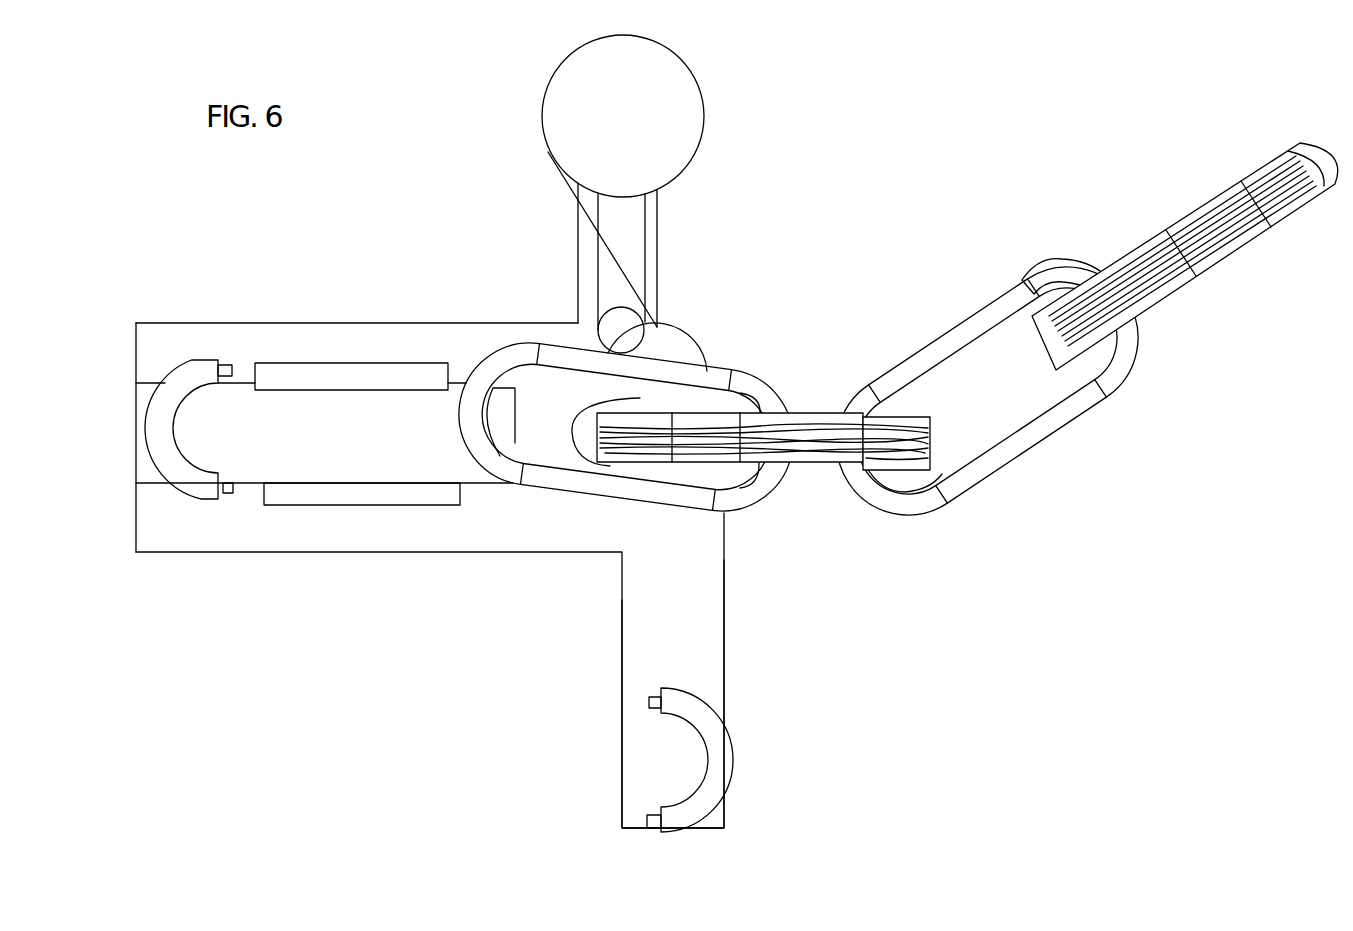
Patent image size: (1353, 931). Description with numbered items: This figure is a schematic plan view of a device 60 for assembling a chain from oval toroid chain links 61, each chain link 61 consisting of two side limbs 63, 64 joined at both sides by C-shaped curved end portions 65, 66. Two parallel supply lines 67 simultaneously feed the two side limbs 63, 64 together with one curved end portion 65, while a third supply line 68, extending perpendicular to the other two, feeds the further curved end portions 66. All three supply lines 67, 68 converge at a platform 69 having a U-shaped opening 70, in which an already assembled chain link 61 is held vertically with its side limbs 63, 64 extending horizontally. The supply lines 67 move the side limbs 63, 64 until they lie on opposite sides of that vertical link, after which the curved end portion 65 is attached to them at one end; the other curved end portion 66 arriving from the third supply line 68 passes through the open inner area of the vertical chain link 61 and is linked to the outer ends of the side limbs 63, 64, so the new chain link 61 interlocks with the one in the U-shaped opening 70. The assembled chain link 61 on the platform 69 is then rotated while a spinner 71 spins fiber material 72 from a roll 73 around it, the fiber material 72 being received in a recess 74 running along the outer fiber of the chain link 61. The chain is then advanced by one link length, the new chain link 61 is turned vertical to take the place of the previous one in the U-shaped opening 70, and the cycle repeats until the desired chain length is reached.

The device for assembling a chain 60 is at (876, 148).
The chain link 61 is at (1184, 334).
The side limb 63 is at (338, 503).
The side limb 64 is at (320, 388).
The curved end portion 65 is at (160, 441).
The curved end portion 66 is at (725, 758).
The supply line 67 is at (147, 362).
The third supply line 68 is at (722, 684).
The platform 69 is at (667, 333).
The U-shaped opening 70 is at (690, 403).
The spinner 71 is at (603, 318).
The fiber material 72 is at (577, 207).
The roll of fiber material 73 is at (683, 112).
The recess 74 is at (947, 421).